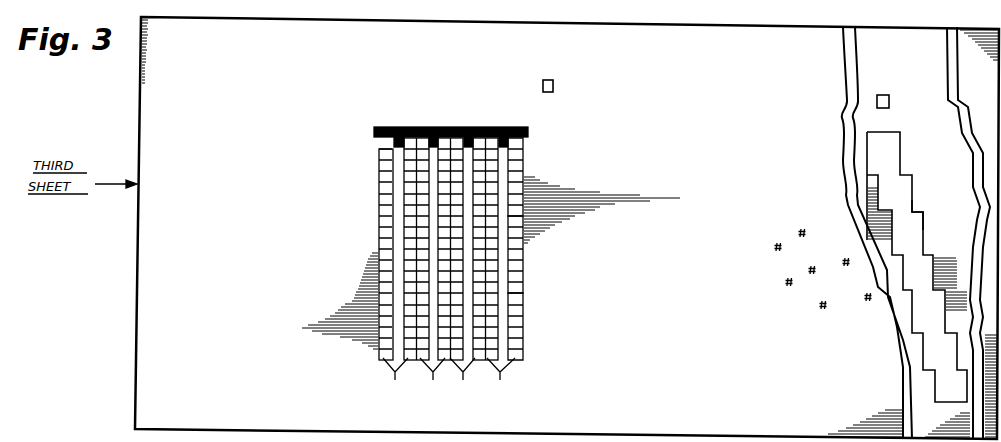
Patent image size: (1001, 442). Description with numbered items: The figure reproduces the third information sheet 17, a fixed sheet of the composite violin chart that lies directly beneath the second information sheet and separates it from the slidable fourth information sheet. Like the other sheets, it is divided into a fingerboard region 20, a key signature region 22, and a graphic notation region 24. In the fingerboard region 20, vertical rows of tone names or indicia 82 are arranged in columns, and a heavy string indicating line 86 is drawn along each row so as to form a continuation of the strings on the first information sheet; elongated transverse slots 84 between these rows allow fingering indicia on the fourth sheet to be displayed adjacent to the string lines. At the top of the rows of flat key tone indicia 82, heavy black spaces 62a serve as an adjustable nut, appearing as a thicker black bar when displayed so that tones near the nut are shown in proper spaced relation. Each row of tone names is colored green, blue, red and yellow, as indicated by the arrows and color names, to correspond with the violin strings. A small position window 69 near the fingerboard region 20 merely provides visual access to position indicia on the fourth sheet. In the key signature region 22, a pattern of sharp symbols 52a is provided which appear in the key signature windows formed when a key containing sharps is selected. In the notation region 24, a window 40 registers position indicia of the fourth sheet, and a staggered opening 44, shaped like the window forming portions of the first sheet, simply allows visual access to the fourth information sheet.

The third information sheet 17 is at (672, 32).
The fingerboard region 20 is at (491, 249).
The black spaces 62a is at (379, 146).
The vertical rows of tone names or indicia 82 is at (524, 166).
The heavy string indicating line 86 is at (518, 250).
The elongated transverse slots 84 is at (524, 327).
The position window 69 is at (554, 86).
The key signature region 22 is at (775, 208).
The sharp symbols 52a is at (820, 311).
The window 40 is at (889, 97).
The notation or graphic notation region 24 is at (917, 159).
The staggered opening 44 is at (926, 216).